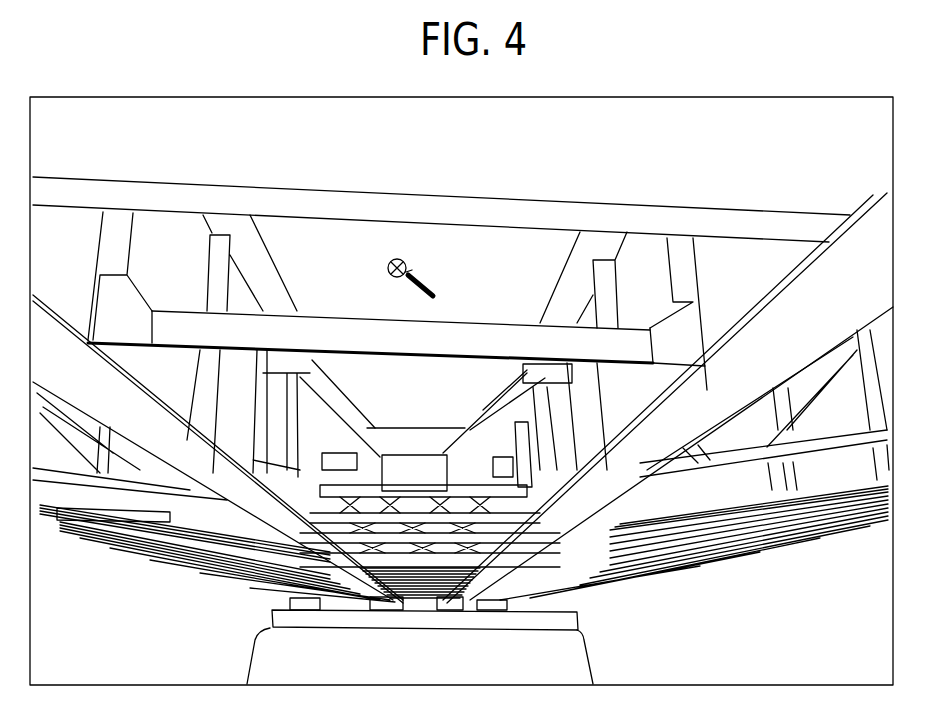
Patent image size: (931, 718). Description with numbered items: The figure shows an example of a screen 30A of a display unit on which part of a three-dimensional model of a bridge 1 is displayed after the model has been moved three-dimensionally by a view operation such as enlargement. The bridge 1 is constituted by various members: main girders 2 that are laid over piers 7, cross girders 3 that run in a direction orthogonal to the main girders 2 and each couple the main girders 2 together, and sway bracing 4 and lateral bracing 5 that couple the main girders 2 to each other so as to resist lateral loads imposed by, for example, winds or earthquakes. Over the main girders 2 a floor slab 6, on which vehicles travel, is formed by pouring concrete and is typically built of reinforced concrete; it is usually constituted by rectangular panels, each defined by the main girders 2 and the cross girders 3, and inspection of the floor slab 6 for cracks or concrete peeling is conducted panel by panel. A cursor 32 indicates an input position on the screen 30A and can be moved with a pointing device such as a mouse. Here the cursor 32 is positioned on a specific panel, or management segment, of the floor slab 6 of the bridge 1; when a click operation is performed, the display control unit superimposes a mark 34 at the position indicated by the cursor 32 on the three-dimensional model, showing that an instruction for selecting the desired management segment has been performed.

The bridge 1 is at (565, 163).
The main girders 2 is at (147, 428).
The cross girders 3 is at (180, 328).
The sway bracing 4 is at (350, 420).
The lateral bracing 5 is at (743, 490).
The floor slab 6 is at (310, 231).
The piers 7 is at (590, 640).
The screen 30A is at (722, 97).
The cursor 32 is at (420, 283).
The mark 34 is at (387, 268).